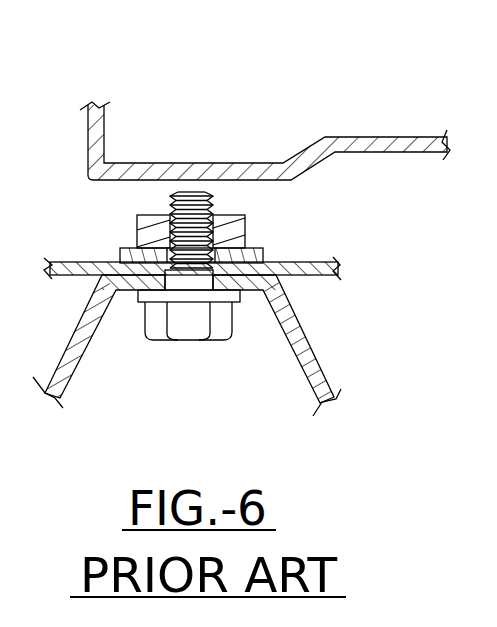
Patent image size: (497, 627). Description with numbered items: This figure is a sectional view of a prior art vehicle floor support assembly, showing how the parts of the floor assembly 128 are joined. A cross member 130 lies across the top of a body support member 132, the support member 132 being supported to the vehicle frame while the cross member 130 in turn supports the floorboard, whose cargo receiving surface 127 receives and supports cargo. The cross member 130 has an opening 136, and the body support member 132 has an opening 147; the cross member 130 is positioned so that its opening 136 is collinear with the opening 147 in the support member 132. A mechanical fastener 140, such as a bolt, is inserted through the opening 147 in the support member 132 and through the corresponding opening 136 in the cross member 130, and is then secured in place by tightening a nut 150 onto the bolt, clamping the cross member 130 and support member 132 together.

The cargo receiving surface 127 is at (157, 163).
The floor assembly 128 is at (370, 91).
The cross member 130 is at (313, 277).
The body support member 132 is at (312, 364).
The opening 136 is at (218, 267).
The mechanical fastener 140 is at (165, 367).
The opening 147 is at (256, 280).
The nut 150 is at (222, 220).